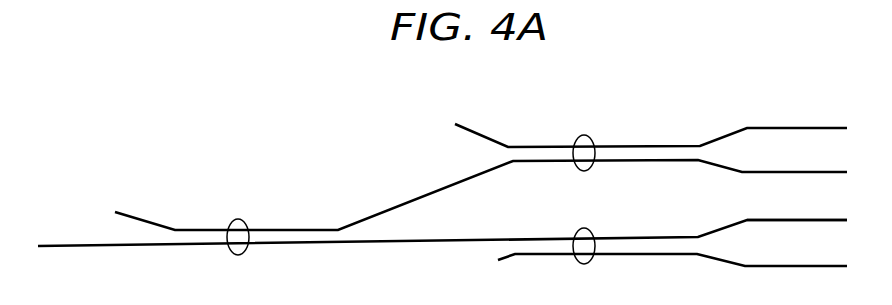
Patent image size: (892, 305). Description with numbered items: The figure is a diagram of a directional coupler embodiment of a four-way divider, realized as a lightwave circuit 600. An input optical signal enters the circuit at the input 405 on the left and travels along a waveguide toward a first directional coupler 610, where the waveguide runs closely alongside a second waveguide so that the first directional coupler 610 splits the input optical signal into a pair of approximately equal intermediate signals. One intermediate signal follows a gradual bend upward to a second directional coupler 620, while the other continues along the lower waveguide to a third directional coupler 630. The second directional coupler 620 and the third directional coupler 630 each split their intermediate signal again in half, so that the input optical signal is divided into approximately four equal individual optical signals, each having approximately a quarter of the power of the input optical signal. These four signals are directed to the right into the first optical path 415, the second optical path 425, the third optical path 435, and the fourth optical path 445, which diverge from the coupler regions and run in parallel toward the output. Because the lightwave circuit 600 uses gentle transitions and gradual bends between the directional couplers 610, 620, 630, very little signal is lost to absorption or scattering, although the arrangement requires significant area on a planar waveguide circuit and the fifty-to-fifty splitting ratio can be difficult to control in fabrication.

The lightwave circuit 600 is at (338, 103).
The input 405 is at (70, 245).
The first optical path 415 is at (825, 127).
The second optical path 425 is at (827, 172).
The third optical path 435 is at (825, 218).
The fourth optical path 445 is at (827, 263).
The first directional coupler 610 is at (238, 218).
The second directional coupler 620 is at (587, 135).
The third directional coupler 630 is at (585, 227).